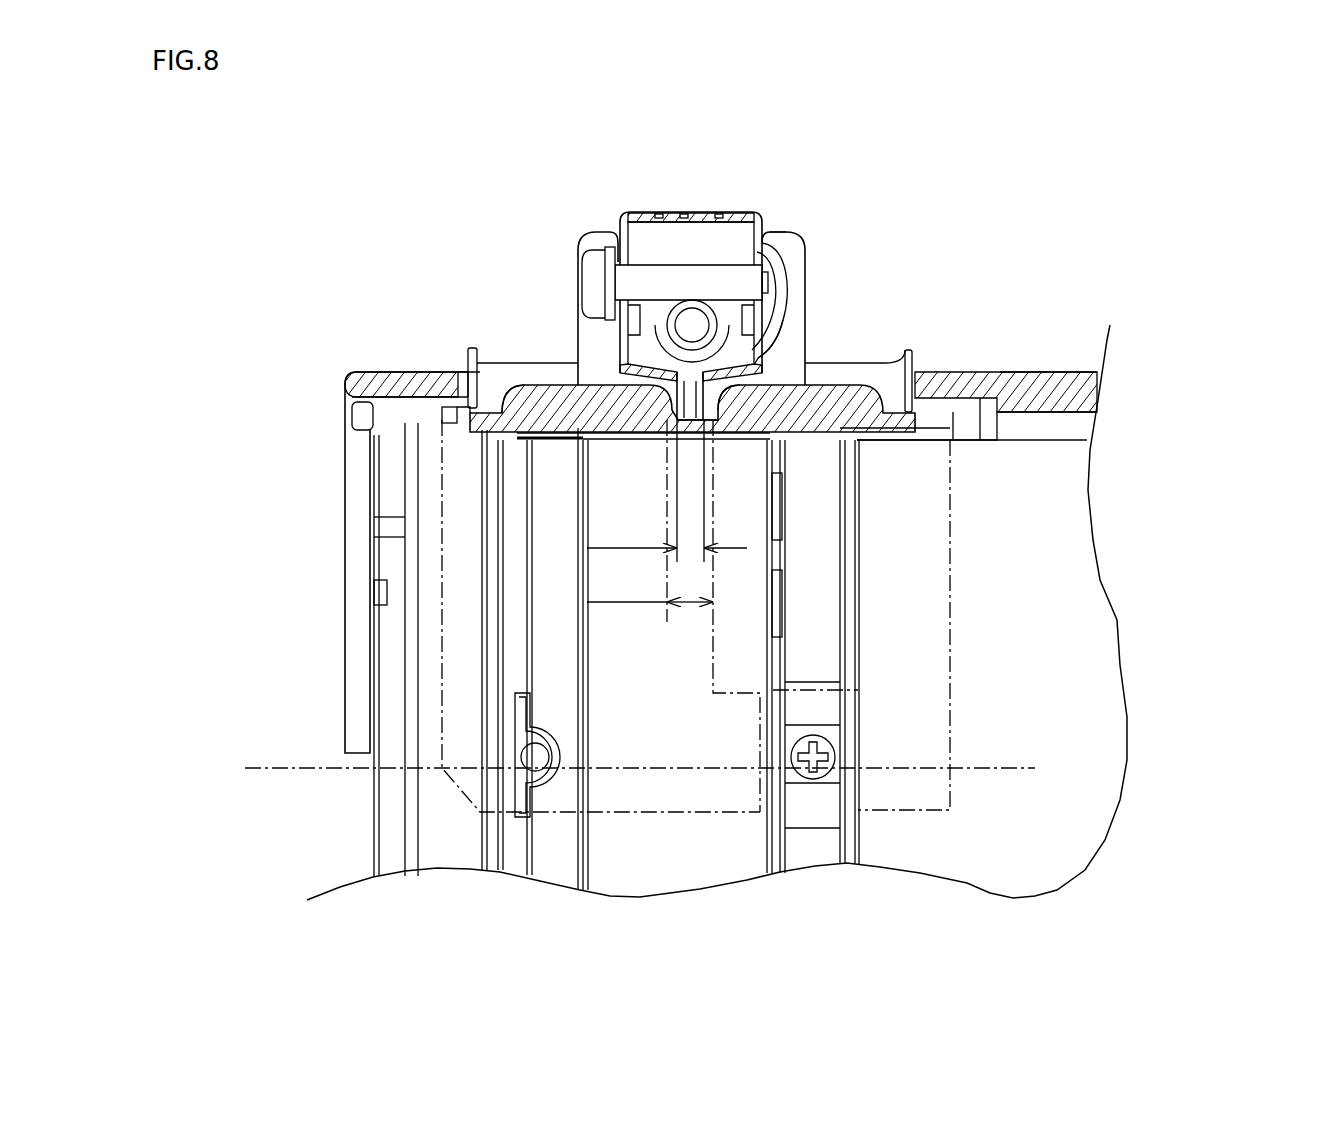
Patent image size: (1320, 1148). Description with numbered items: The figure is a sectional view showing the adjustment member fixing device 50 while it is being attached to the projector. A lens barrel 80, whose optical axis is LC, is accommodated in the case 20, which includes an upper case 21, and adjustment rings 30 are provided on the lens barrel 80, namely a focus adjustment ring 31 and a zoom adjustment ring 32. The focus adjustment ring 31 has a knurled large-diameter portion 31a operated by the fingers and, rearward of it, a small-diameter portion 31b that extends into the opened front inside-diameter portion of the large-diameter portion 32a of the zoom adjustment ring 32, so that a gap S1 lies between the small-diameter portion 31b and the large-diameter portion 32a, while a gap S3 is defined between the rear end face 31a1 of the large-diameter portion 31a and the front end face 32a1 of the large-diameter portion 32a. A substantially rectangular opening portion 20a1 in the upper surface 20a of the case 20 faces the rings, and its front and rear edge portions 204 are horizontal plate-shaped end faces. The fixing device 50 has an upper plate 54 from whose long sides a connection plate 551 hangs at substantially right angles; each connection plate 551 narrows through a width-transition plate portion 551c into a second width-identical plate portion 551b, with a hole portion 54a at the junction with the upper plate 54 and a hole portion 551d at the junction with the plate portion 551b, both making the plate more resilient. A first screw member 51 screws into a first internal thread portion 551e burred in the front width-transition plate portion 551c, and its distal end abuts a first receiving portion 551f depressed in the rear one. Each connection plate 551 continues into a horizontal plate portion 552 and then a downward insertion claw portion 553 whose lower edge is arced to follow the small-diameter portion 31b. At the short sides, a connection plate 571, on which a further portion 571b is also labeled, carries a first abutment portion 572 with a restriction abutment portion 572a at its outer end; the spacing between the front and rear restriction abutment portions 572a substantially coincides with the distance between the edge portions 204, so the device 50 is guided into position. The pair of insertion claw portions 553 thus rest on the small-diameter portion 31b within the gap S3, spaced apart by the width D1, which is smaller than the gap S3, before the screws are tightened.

The case 20 is at (708, 504).
The upper surface 20a is at (1073, 370).
The opening portion 20a1 is at (462, 372).
The upper case 21 is at (380, 383).
The edge portions 204 is at (450, 387).
The adjustment rings 30 is at (745, 501).
The focus adjustment ring 31 is at (506, 668).
The large-diameter portion 31a is at (555, 410).
The rear end face 31a1 is at (680, 620).
The small-diameter portion 31b is at (690, 412).
The zoom adjustment ring 32 is at (918, 680).
The large-diameter portion 32a is at (835, 398).
The front end face 32a1 is at (700, 645).
The adjustment member fixing device 50 is at (724, 249).
The first screw member 51 is at (596, 272).
The upper plate 54 is at (687, 251).
The hole portion 54a is at (627, 213).
The connection plate 551 is at (724, 231).
The second width-identical plate portion 551b is at (760, 378).
The width-transition plate portion 551c is at (600, 245).
The hole portion 551d is at (764, 356).
The first internal thread portion 551e is at (640, 262).
The first receiving portion 551f is at (778, 262).
The horizontal plate portion 552 is at (765, 330).
The insertion claw portion 553 is at (677, 402).
The connection plate 571 is at (807, 249).
The screw head 571b is at (694, 322).
The first abutment portion 572 is at (738, 312).
The restriction abutment portion 572a is at (471, 348).
The lens barrel 80 is at (447, 830).
The optical axis LC is at (330, 770).
The distance D1 is at (667, 530).
The gap S3 is at (650, 584).
The gap S1 is at (737, 414).